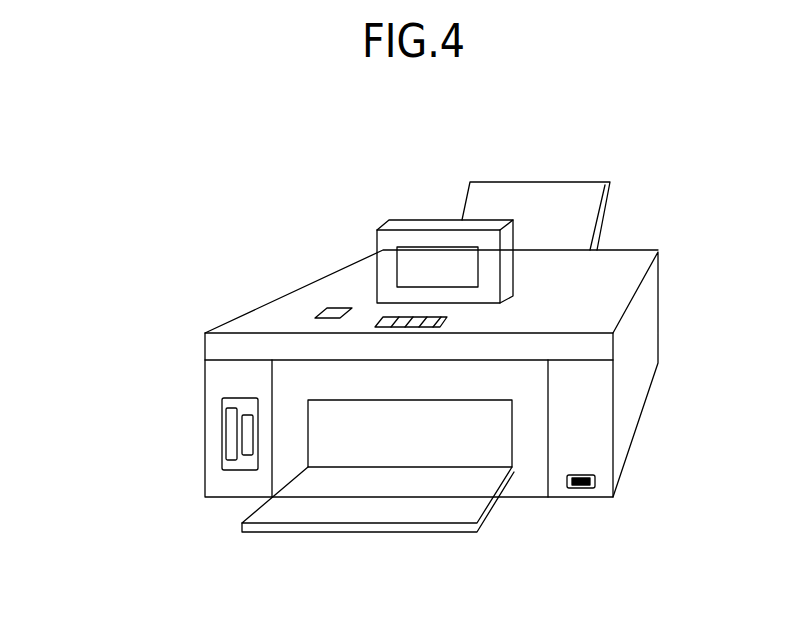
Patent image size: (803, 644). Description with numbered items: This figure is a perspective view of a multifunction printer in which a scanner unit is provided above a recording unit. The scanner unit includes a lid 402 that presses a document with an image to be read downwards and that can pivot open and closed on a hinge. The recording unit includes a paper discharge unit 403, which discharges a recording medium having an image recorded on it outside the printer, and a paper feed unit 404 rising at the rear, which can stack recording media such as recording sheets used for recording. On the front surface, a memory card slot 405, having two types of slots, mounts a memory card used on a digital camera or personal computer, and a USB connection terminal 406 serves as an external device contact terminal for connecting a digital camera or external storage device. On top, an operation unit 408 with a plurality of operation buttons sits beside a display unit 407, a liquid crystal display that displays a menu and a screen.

The lid 402 is at (632, 263).
The paper discharge unit 403 is at (283, 523).
The paper feed unit 404 is at (548, 197).
The memory card slot 405 is at (222, 416).
The USB connection terminal 406 is at (582, 490).
The display unit 407 is at (438, 257).
The operation unit 408 is at (372, 322).